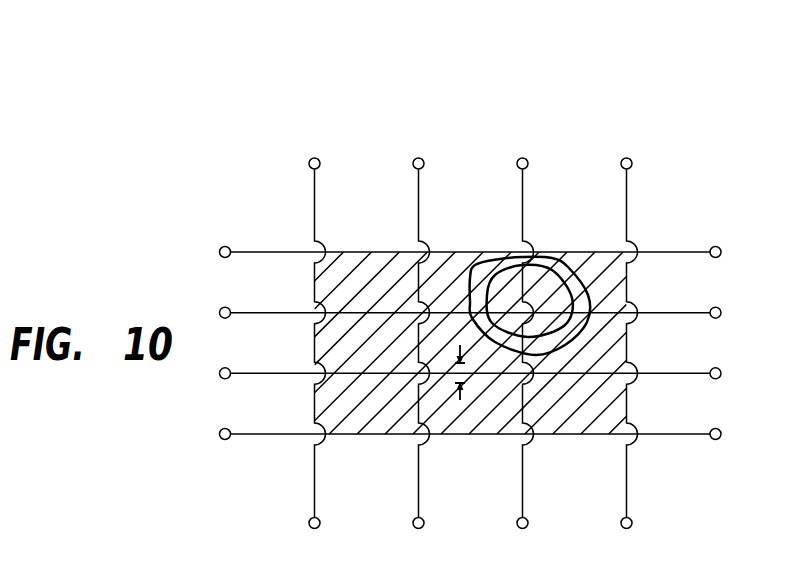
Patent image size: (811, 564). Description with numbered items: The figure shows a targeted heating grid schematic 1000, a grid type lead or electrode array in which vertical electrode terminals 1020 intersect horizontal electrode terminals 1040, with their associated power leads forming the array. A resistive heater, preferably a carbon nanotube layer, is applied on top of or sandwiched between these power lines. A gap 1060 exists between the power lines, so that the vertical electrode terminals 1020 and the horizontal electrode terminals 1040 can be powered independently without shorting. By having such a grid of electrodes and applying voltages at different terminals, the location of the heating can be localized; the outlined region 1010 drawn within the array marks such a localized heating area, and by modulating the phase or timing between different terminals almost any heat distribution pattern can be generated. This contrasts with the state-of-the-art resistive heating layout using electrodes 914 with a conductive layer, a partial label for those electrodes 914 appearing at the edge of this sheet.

The electrodes 914 is at (22, 0).
The targeted heating grid schematic 1000 is at (245, 187).
The defect region 1010 is at (553, 282).
The vertical electrode terminals 1020 is at (515, 163).
The horizontal electrode terminals 1040 is at (717, 244).
The gap 1060 is at (447, 367).